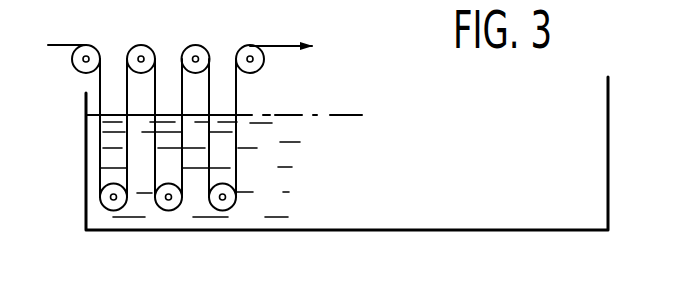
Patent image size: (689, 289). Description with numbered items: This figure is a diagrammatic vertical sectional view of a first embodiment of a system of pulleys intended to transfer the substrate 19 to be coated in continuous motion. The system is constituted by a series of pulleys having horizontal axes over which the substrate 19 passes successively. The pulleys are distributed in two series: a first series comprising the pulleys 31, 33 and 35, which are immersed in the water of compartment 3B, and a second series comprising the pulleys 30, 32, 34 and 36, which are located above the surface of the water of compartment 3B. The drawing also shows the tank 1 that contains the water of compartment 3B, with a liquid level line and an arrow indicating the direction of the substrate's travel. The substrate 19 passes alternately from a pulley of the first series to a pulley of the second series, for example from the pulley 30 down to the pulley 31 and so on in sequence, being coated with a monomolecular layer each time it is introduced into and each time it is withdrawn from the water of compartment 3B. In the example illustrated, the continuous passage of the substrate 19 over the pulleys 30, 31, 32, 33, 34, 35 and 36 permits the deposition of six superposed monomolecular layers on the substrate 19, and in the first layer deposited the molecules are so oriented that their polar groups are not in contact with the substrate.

The tank 1 is at (85, 148).
The compartment 3B is at (280, 132).
The substrate 19 is at (97, 78).
The pulley 30 is at (91, 45).
The pulley 31 is at (118, 208).
The pulley 32 is at (141, 46).
The pulley 33 is at (172, 208).
The pulley 34 is at (188, 46).
The pulley 35 is at (227, 208).
The pulley 36 is at (263, 62).